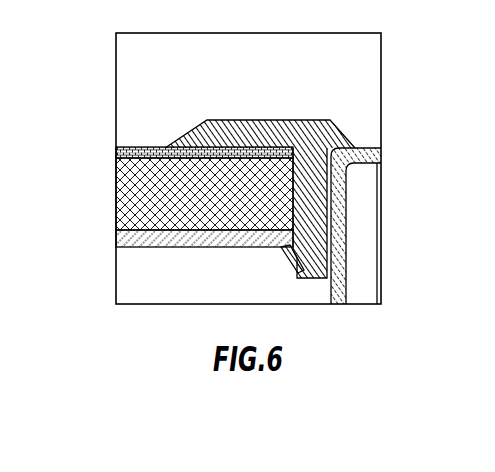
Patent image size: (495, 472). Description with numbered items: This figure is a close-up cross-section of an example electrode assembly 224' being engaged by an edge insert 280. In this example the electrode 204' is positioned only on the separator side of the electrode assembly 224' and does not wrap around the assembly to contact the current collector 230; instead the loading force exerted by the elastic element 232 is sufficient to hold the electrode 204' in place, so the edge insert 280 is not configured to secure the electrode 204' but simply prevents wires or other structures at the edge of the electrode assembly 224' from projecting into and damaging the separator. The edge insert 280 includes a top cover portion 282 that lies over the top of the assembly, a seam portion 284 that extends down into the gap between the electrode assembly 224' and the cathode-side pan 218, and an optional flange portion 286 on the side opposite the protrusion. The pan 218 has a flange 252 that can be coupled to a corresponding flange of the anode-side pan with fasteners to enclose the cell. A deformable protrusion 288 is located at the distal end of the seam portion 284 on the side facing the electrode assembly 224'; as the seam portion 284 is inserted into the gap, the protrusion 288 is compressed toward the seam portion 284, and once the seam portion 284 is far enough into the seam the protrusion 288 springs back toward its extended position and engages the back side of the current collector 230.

The edge insert 280 is at (295, 95).
The top cover portion 282 is at (238, 135).
The seam portion 284 is at (307, 202).
The flange portion 286 is at (338, 137).
The deformable protrusion 288 is at (290, 259).
The cathode-side pan 218 is at (340, 249).
The flange 252 is at (366, 150).
The electrode 204' is at (204, 125).
The electrode assembly 224' is at (171, 198).
The current collector 230 is at (150, 242).
The elastic element 232 is at (167, 183).